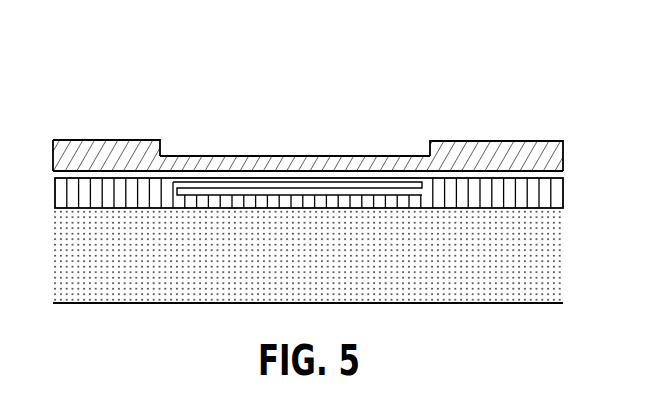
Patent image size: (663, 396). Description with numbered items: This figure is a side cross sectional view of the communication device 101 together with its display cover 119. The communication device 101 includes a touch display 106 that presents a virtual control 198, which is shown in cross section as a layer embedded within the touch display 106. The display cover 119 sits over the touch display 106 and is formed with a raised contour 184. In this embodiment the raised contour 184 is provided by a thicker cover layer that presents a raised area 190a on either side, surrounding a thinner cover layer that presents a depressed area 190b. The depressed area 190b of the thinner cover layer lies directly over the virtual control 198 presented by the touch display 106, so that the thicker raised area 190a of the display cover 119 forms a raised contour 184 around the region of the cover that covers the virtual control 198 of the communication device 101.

The communication device 101 is at (323, 254).
The touch display 106 is at (477, 195).
The display cover 119 is at (474, 141).
The raised contour 184 is at (112, 140).
The raised area 190a is at (152, 140).
The depressed area 190b is at (312, 156).
The virtual control 198 is at (402, 197).